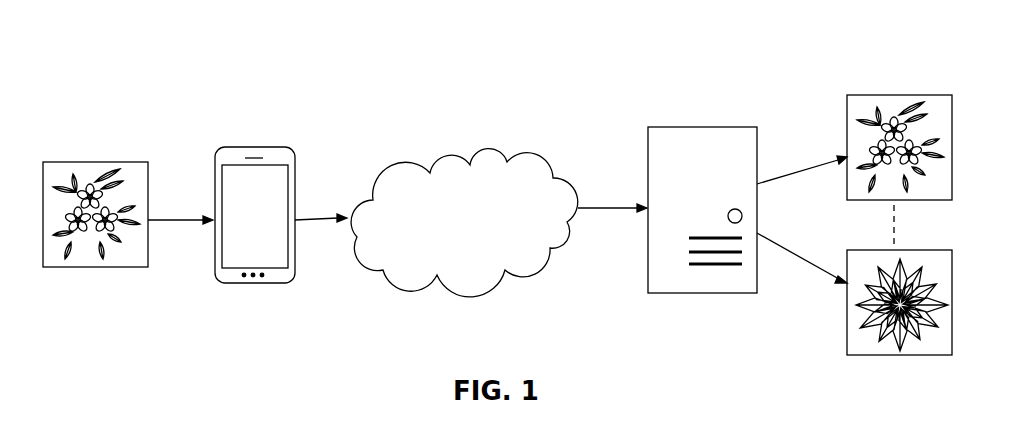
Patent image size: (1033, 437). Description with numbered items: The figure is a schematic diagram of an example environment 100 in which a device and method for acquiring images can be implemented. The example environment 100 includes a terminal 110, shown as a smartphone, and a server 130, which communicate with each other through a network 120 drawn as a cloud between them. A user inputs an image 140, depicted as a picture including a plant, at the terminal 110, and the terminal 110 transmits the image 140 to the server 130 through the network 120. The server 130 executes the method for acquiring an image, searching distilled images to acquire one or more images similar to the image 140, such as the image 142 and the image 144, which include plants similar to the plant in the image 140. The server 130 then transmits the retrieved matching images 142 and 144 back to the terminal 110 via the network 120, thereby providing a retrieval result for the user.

The example environment 100 is at (151, 50).
The terminal 110 is at (263, 147).
The network 120 is at (448, 160).
The server 130 is at (695, 127).
The image 140 is at (97, 162).
The image 142 is at (888, 95).
The image 144 is at (912, 250).